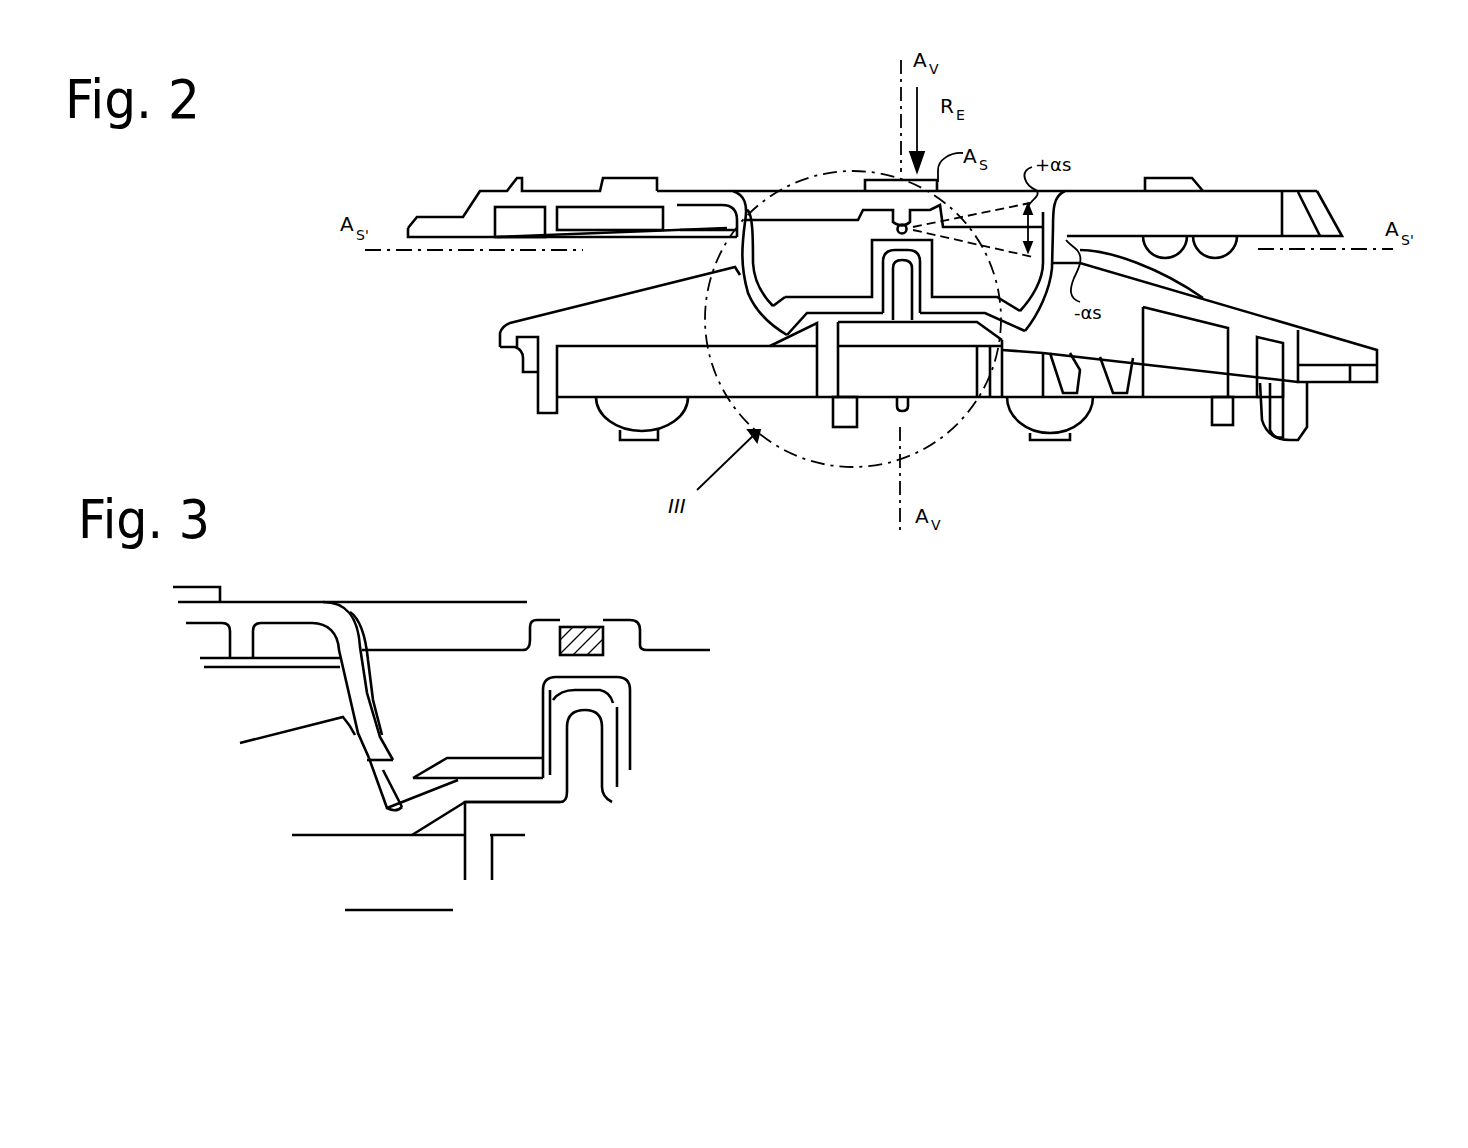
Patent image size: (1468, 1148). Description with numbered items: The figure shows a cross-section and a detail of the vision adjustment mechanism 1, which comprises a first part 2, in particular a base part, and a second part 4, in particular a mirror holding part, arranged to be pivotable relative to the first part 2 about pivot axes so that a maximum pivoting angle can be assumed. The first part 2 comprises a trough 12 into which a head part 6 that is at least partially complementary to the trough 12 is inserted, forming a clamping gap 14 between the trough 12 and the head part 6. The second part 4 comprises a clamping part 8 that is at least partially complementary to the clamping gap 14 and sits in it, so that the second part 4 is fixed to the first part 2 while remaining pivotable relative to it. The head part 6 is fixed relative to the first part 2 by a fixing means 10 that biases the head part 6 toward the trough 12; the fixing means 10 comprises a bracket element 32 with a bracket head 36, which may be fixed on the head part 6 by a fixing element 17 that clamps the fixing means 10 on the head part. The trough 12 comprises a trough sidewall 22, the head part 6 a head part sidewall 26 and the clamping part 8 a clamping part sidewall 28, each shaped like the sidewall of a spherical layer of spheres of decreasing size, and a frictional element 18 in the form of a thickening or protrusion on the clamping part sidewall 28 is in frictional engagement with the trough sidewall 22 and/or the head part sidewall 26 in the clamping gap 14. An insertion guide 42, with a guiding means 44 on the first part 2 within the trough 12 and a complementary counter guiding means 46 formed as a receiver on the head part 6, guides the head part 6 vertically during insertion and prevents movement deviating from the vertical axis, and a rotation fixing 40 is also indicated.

In FIG. 2, the vision adjustment mechanism 1 is at (1015, 110).
In FIG. 3, the first part 2 is at (365, 878).
In FIG. 2, the second part 4 is at (1252, 198).
In FIG. 3, the second part 4 is at (265, 618).
In FIG. 2, the head part 6 is at (780, 253).
In FIG. 3, the head part 6 is at (367, 643).
In FIG. 2, the clamping part 8 is at (737, 273).
In FIG. 3, the clamping part 8 is at (252, 718).
In FIG. 2, the fixing means 10 is at (903, 224).
In FIG. 3, the fixing means 10 is at (504, 600).
In FIG. 2, the trough 12 is at (737, 301).
In FIG. 3, the trough 12 is at (295, 801).
In FIG. 2, the clamping gap 14 is at (770, 313).
In FIG. 3, the clamping gap 14 is at (398, 800).
In FIG. 3, the fixing element 17 is at (620, 638).
In FIG. 3, the frictional element 18 is at (360, 740).
In FIG. 3, the trough sidewall 22 is at (373, 795).
In FIG. 3, the head part sidewall 26 is at (403, 697).
In FIG. 3, the clamping part sidewall 28 is at (357, 698).
In FIG. 3, the bracket element 32 is at (504, 600).
In FIG. 3, the bracket head 36 is at (580, 637).
In FIG. 2, the rotation fixing 40 is at (887, 372).
In FIG. 3, the rotation fixing 40 is at (662, 762).
In FIG. 3, the insertion guide 42 is at (662, 762).
In FIG. 3, the guiding means 44 is at (558, 775).
In FIG. 3, the counter guiding means 46 is at (553, 700).